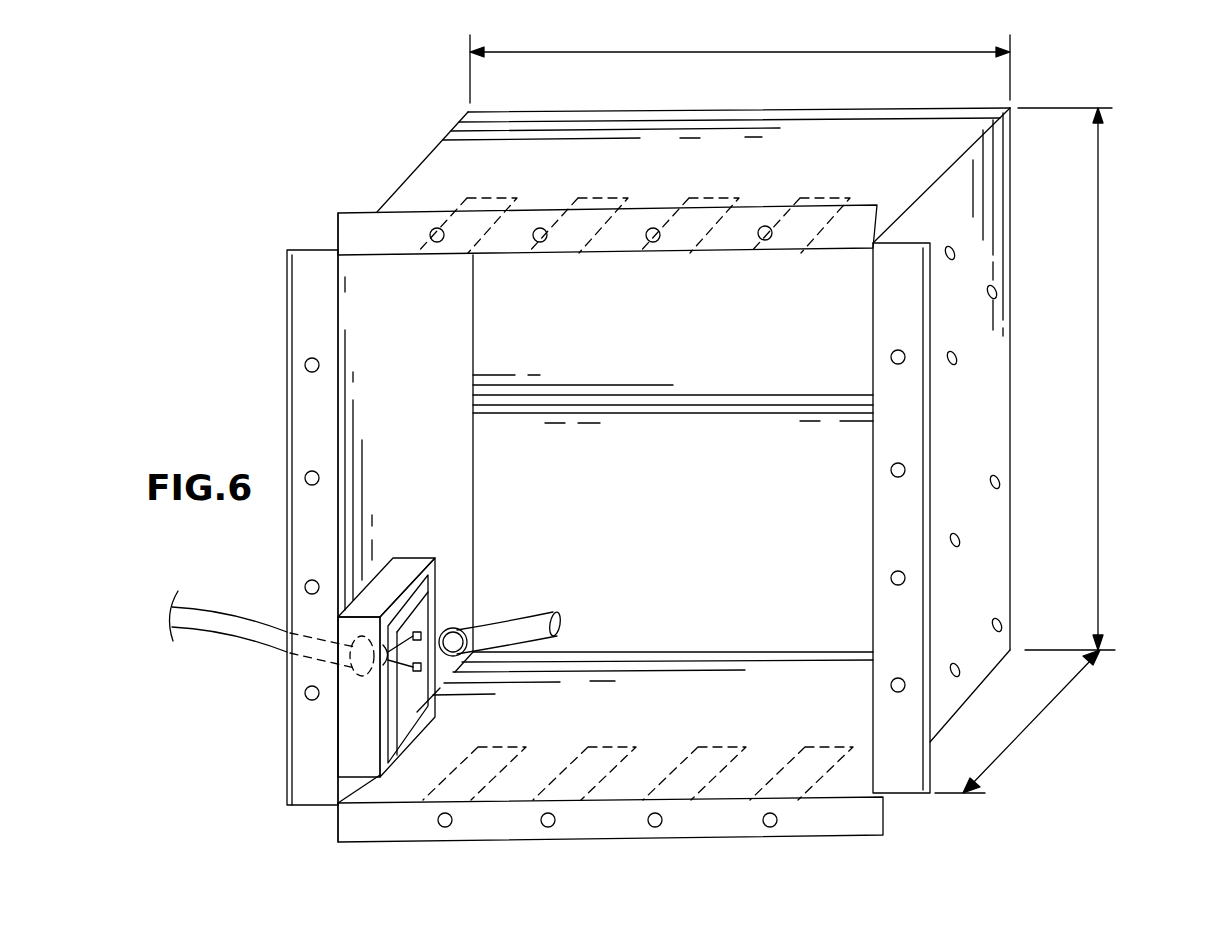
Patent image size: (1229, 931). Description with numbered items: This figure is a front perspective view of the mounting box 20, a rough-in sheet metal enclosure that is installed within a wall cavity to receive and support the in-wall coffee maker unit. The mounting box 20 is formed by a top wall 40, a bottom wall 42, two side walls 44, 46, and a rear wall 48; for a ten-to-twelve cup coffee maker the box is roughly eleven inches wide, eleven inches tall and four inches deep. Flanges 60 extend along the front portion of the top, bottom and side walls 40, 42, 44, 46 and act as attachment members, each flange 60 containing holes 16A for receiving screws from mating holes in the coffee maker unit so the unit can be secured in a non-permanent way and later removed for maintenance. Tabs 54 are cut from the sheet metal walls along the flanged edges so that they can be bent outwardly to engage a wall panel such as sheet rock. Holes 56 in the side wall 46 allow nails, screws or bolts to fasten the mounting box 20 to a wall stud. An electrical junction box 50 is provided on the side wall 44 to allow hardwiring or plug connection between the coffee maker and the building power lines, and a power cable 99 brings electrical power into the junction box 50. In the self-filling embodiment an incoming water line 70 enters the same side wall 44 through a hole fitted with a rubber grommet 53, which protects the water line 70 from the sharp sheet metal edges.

The mounting box 20 is at (1135, 194).
The top wall 40 is at (698, 165).
The bottom wall 42 is at (696, 705).
The side wall 44 is at (416, 455).
The side wall 46 is at (986, 443).
The rear wall 48 is at (686, 477).
The electrical junction box 50 is at (410, 565).
The rubber grommet 53 is at (455, 628).
The tabs 54 is at (823, 195).
The holes 56 is at (962, 540).
The flanges 60 is at (357, 232).
The incoming water line 70 is at (540, 612).
The power cable 99 is at (215, 605).
The holes 16A is at (305, 366).